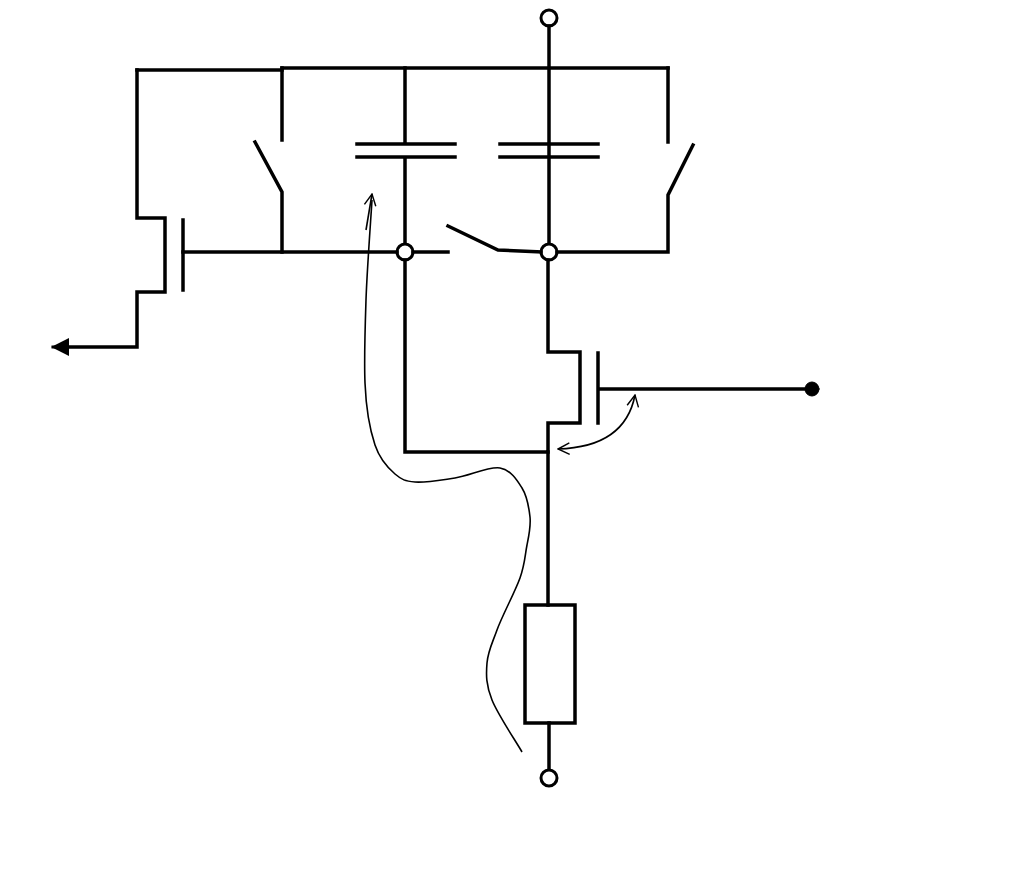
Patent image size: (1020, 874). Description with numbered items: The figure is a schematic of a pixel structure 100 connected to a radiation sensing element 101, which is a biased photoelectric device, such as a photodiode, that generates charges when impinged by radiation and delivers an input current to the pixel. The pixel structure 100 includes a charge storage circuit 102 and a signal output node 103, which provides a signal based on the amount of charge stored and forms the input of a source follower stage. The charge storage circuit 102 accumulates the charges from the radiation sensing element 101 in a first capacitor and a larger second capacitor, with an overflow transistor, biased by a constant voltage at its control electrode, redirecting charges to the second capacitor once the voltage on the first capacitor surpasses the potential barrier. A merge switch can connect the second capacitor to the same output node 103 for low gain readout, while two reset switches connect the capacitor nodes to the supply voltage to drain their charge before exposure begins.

The pixel structure 100 is at (318, 573).
The radiation sensing element 101 is at (570, 663).
The charge storage circuit 102 is at (682, 67).
The signal output node 103 is at (282, 260).